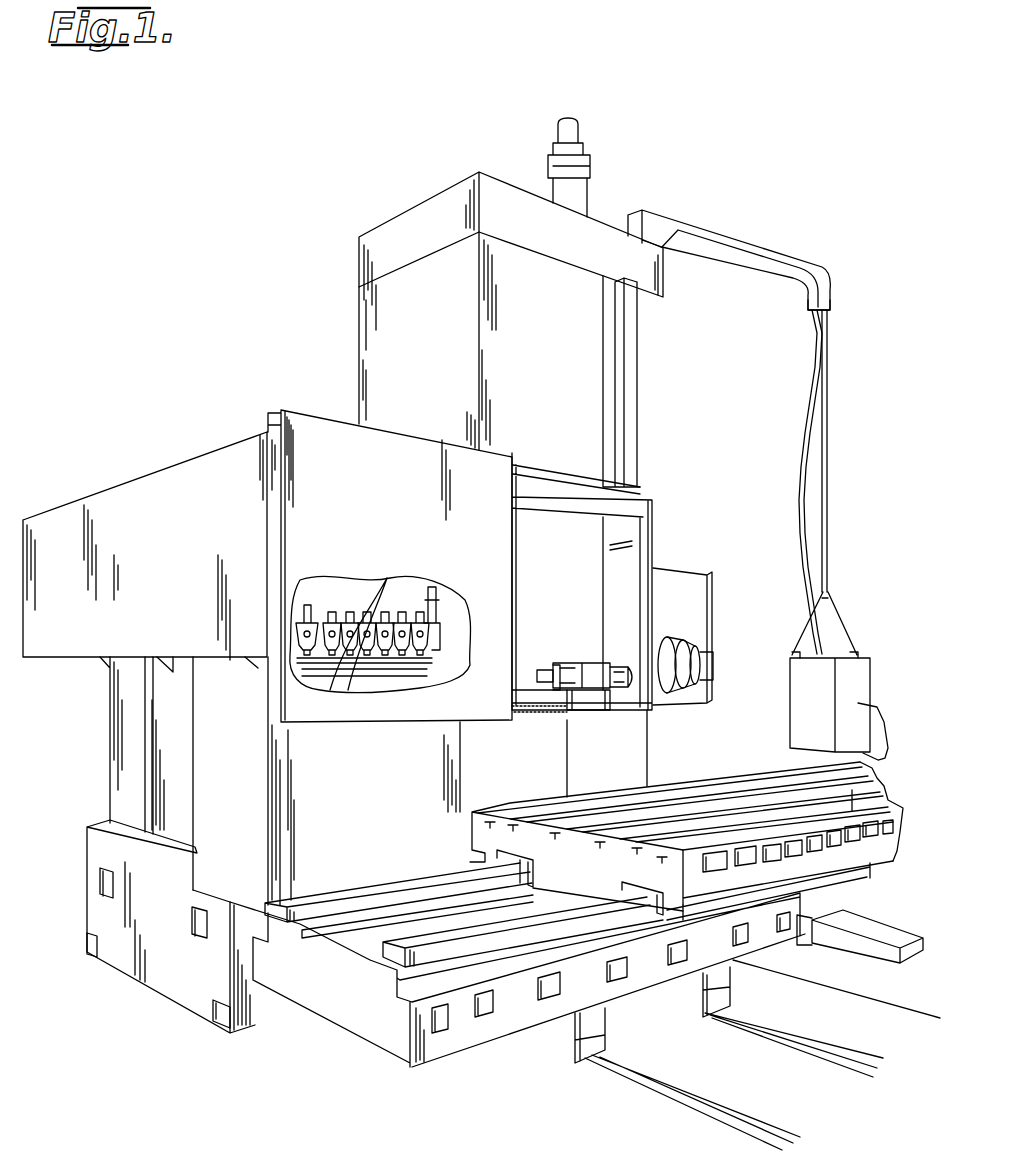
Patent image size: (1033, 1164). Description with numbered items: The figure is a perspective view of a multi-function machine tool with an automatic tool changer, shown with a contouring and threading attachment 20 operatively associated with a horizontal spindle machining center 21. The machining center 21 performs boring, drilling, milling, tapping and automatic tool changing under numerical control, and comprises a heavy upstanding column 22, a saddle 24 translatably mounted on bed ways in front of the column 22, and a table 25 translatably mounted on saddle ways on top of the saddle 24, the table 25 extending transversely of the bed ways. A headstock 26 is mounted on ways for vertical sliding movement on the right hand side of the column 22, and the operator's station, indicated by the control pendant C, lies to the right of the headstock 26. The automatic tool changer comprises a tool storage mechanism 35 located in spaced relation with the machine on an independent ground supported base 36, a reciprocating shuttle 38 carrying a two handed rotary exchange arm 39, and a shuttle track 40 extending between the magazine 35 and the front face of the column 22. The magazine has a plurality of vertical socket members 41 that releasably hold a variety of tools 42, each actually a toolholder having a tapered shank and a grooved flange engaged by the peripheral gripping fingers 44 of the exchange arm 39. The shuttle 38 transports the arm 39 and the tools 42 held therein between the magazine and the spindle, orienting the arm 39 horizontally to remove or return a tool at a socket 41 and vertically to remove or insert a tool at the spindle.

The contouring and threading attachment 20 is at (725, 675).
The horizontal spindle machining center 21 is at (327, 371).
The column 22 is at (357, 312).
The saddle 24 is at (344, 1020).
The table 25 is at (867, 787).
The headstock 26 is at (684, 585).
The tool storage mechanism 35 is at (425, 626).
The ground supported base 36 is at (123, 755).
The reciprocating shuttle 38 is at (590, 704).
The two handed rotary exchange arm 39 is at (587, 682).
The shuttle track 40 is at (524, 712).
The vertical socket members 41 is at (352, 690).
The tools 42 is at (402, 612).
The peripheral gripping fingers 44 is at (633, 670).
The control pendant C is at (866, 665).